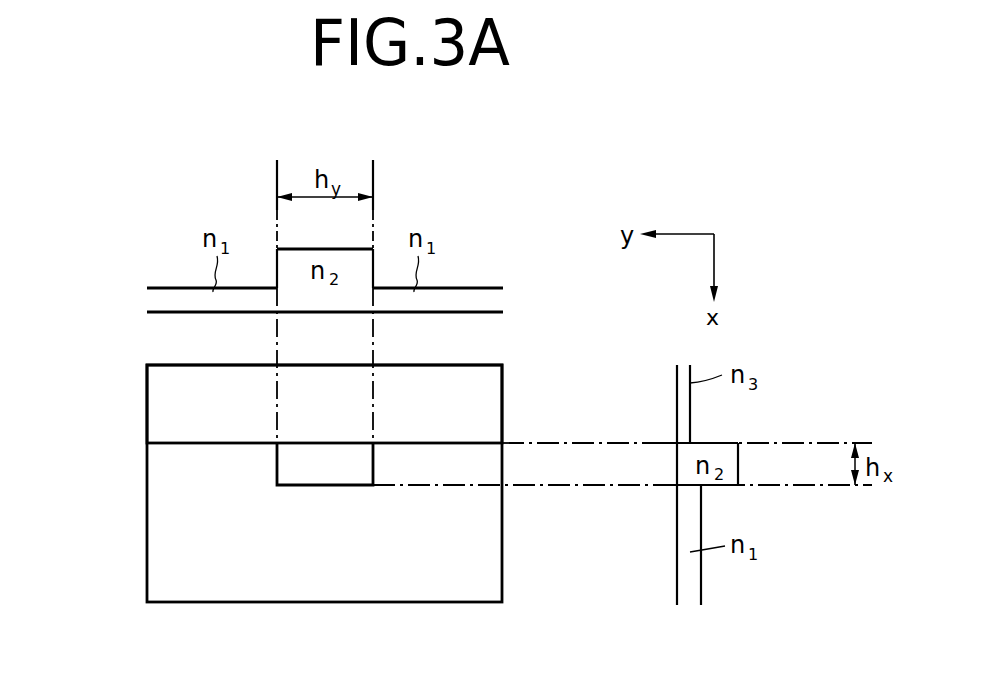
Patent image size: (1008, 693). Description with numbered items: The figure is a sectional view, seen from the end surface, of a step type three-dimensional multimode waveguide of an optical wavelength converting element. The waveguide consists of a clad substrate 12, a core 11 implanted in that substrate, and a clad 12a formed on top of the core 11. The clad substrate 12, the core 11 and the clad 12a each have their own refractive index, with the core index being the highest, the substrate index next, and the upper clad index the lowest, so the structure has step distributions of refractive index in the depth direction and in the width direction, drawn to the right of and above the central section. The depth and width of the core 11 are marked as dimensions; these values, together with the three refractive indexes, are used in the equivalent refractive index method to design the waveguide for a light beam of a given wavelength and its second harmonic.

The core 11 is at (277, 464).
The clad substrate 12 is at (495, 577).
The clad 12a is at (152, 410).